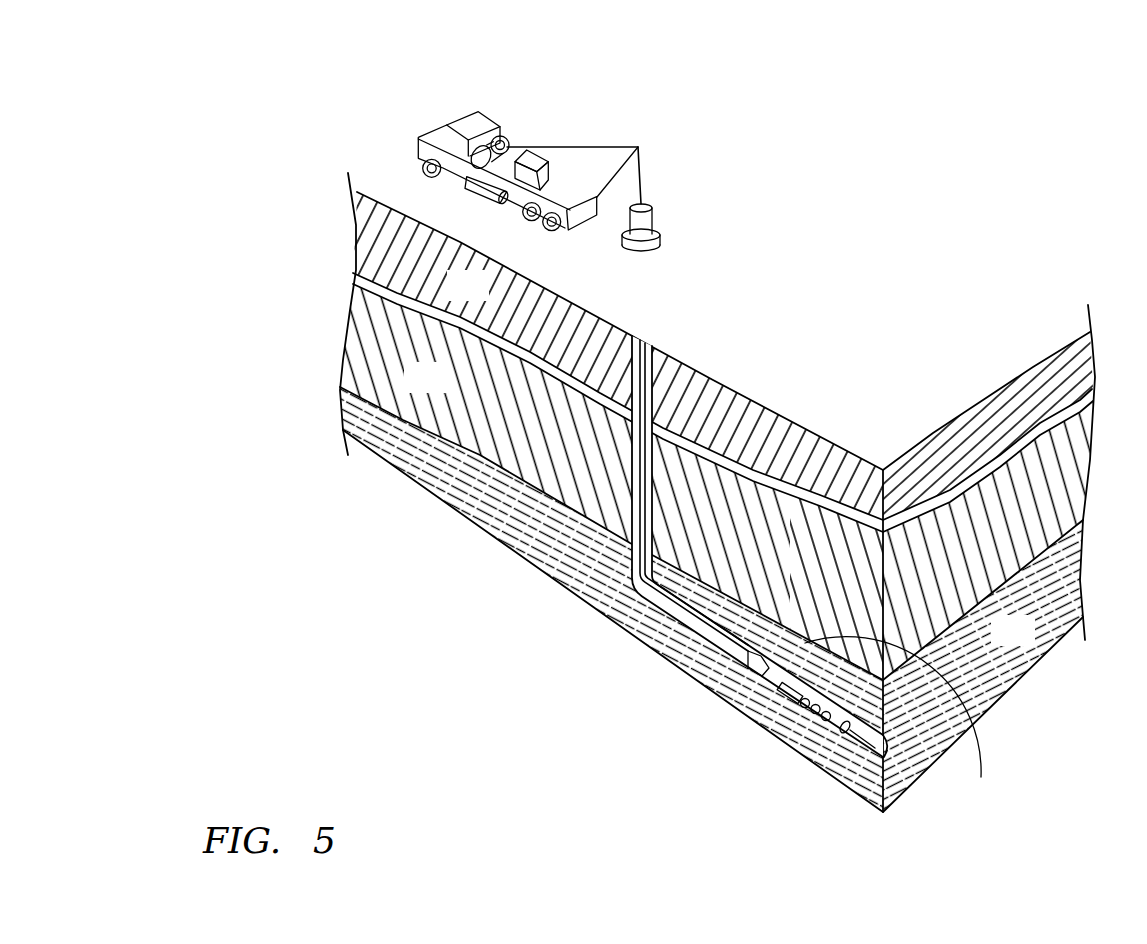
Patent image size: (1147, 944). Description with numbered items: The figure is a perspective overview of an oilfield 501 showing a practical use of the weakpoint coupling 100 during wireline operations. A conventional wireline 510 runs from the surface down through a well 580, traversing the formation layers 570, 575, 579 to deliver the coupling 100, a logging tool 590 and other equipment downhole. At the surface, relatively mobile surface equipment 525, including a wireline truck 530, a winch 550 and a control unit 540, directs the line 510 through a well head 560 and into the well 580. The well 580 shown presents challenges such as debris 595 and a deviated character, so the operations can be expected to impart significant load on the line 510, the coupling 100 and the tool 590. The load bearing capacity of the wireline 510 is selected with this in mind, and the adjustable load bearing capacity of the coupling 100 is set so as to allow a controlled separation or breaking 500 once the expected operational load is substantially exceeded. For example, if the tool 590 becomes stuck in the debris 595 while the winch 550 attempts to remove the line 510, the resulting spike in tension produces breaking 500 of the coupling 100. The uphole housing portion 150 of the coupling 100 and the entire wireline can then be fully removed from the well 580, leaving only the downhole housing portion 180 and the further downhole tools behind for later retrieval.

The weakpoint coupling 100 is at (759, 608).
The uphole housing portion 150 is at (750, 670).
The downhole housing portion 180 is at (790, 690).
The breaking 500 is at (904, 722).
The oilfield 501 is at (717, 492).
The wireline 510 is at (642, 176).
The surface equipment 525 is at (613, 107).
The wireline truck 530 is at (498, 134).
The control unit 540 is at (522, 176).
The winch 550 is at (506, 133).
The well head 560 is at (654, 216).
The formation layer 570 is at (487, 298).
The formation layer 575 is at (445, 391).
The formation layer 579 is at (1031, 643).
The well 580 is at (646, 348).
The logging tool 590 is at (818, 728).
The debris 595 is at (846, 785).